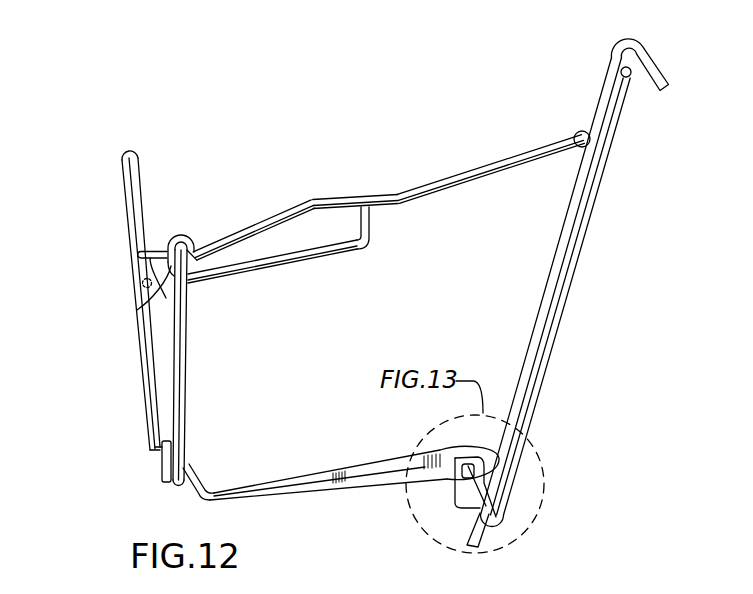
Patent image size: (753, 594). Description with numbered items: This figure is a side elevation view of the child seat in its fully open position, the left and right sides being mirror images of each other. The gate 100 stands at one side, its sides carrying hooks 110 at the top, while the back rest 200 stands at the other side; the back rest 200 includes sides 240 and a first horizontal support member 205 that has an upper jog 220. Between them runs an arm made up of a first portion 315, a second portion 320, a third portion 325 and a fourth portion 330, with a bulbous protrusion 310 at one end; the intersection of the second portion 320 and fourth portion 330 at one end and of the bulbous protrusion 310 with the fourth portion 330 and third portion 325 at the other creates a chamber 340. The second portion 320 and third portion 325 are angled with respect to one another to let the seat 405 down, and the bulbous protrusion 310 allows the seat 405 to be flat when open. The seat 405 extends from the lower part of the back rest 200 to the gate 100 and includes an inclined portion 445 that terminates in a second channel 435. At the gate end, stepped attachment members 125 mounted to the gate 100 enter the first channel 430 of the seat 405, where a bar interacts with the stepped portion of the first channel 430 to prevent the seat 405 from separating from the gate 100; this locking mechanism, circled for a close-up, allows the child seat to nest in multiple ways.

The gate 100 is at (585, 282).
The hooks 110 is at (653, 60).
The attachment members 125 is at (456, 510).
The back rest 200 is at (140, 445).
The first horizontal support member 205 is at (150, 257).
The upper jog 220 is at (140, 253).
The sides 240 is at (188, 360).
The bulbous protrusion 310 is at (177, 235).
The first portion 315 is at (459, 176).
The second portion 320 is at (343, 198).
The third portion 325 is at (232, 232).
The fourth portion 330 is at (304, 258).
The chamber 340 is at (338, 225).
The seat 405 is at (363, 476).
The first channel 430 is at (482, 463).
The second channel 435 is at (178, 491).
The inclined portion 445 is at (194, 478).